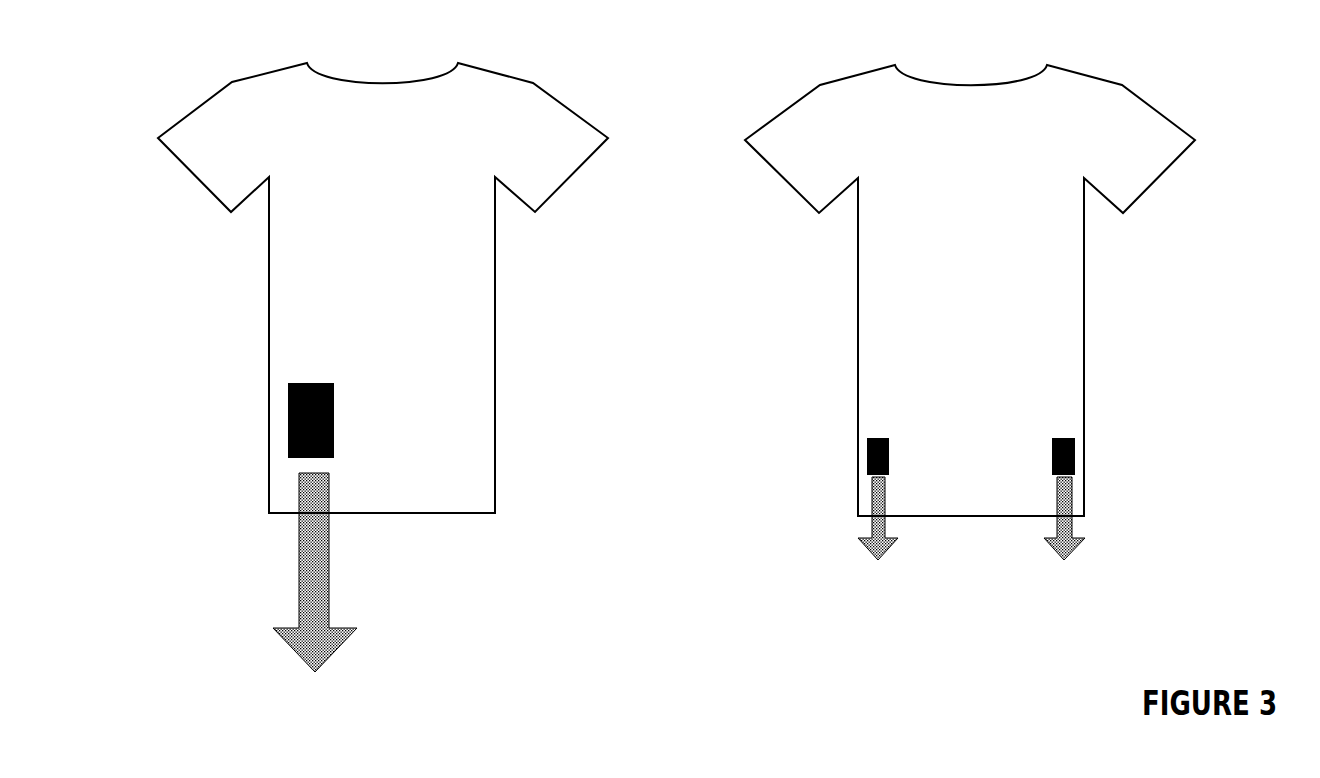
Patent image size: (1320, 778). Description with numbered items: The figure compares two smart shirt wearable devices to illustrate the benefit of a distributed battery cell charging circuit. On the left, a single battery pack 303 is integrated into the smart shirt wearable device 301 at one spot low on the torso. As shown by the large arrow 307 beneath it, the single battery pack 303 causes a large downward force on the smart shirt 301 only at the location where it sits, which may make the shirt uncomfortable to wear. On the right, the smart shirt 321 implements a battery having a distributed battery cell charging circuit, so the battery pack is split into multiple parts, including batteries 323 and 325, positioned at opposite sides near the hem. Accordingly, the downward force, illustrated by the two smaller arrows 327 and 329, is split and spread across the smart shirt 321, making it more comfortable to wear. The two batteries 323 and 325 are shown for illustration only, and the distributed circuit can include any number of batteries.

The smart shirt wearable device 301 is at (533, 83).
The single battery pack 303 is at (334, 423).
The arrow 307 is at (329, 602).
The smart shirt 321 is at (1122, 85).
The battery 323 is at (889, 460).
The battery 325 is at (1075, 463).
The arrow 327 is at (885, 500).
The arrow 329 is at (1072, 500).